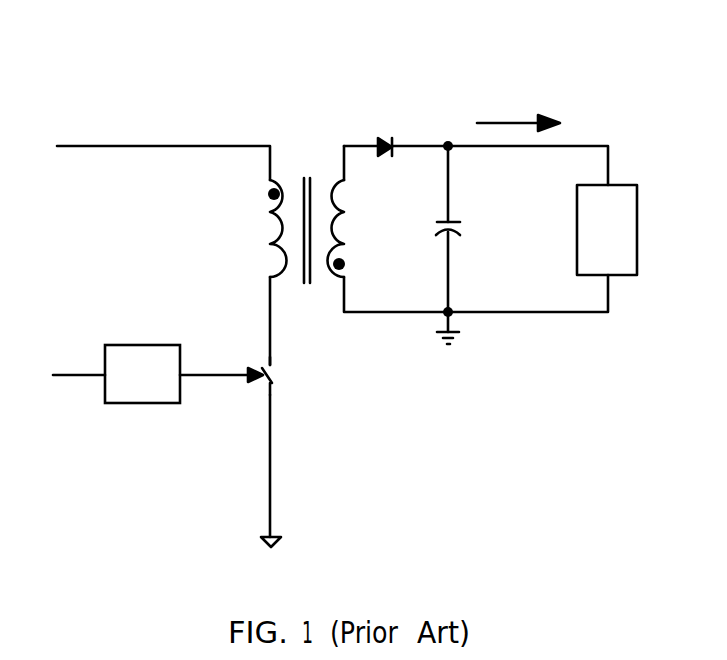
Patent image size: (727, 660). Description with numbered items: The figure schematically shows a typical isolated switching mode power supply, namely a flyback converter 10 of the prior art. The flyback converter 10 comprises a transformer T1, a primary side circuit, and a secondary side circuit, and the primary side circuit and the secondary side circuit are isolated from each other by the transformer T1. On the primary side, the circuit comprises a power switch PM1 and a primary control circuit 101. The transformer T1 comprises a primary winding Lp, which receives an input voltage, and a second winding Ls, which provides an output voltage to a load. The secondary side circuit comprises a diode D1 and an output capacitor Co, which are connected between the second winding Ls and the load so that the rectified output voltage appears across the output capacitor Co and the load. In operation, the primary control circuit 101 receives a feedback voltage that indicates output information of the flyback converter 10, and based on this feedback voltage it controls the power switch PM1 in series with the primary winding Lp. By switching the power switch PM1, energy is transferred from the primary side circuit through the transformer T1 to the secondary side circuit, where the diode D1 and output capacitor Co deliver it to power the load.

The flyback converter 10 is at (613, 55).
The primary control circuit 101 is at (142, 374).
The transformer T1 is at (307, 208).
The primary winding Lp is at (260, 228).
The second winding Ls is at (355, 228).
The power switch PM1 is at (291, 376).
The diode D1 is at (385, 134).
The output capacitor Co is at (465, 229).
The element load is at (607, 230).